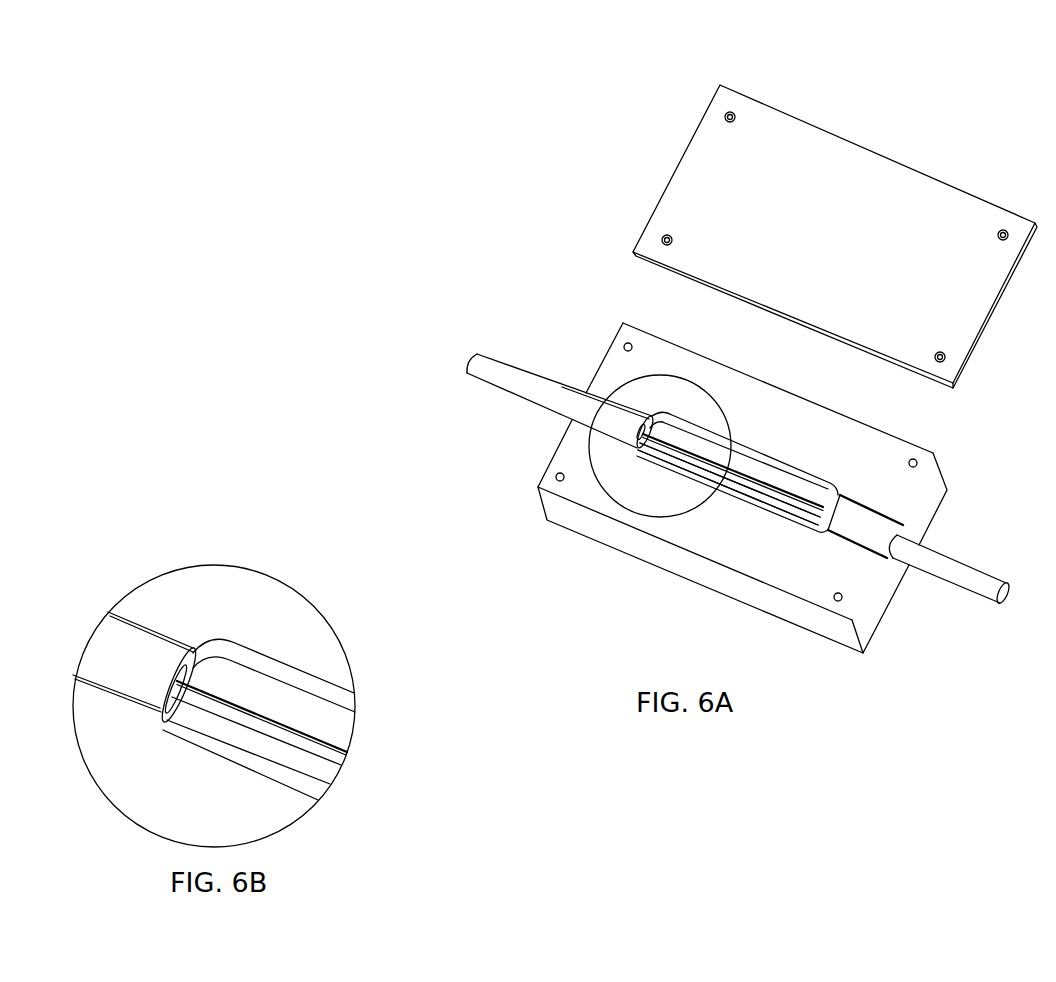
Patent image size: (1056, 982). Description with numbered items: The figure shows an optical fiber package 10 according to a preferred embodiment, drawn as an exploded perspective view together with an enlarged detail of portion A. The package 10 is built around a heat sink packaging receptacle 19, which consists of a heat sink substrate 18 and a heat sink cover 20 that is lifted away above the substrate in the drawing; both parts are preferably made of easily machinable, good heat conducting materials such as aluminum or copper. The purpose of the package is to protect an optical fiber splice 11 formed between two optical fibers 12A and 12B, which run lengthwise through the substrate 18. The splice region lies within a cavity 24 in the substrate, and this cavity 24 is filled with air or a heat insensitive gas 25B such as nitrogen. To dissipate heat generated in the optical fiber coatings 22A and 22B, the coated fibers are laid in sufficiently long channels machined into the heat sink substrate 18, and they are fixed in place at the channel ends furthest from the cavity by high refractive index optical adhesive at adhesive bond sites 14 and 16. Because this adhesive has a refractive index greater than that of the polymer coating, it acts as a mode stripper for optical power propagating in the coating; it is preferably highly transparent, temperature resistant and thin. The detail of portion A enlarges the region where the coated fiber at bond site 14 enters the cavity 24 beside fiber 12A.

In FIG. 6A, the optical fiber package 10 is at (418, 318).
In FIG. 6A, the optical fiber splice 11 is at (788, 482).
In FIG. 6A, the optical fiber 12A is at (663, 470).
In FIG. 6B, the optical fiber 12A is at (237, 713).
In FIG. 6A, the optical fiber 12B is at (778, 497).
In FIG. 6A, the adhesive bond site 14 is at (620, 417).
In FIG. 6B, the adhesive bond site 14 is at (115, 655).
In FIG. 6A, the adhesive bond site 16 is at (850, 520).
In FIG. 6A, the heat sink substrate 18 is at (555, 507).
In FIG. 6A, the heat sink packaging receptacle 19 is at (970, 378).
In FIG. 6A, the heat sink cover 20 is at (648, 222).
In FIG. 6A, the optical fiber coating 22A is at (510, 380).
In FIG. 6A, the optical fiber coating 22B is at (933, 563).
In FIG. 6A, the cavity 24 is at (695, 428).
In FIG. 6B, the cavity 24 is at (312, 713).
In FIG. 6A, the heat insensitive gas 25B is at (800, 468).
In FIG. 6A, the portion A is at (661, 375).